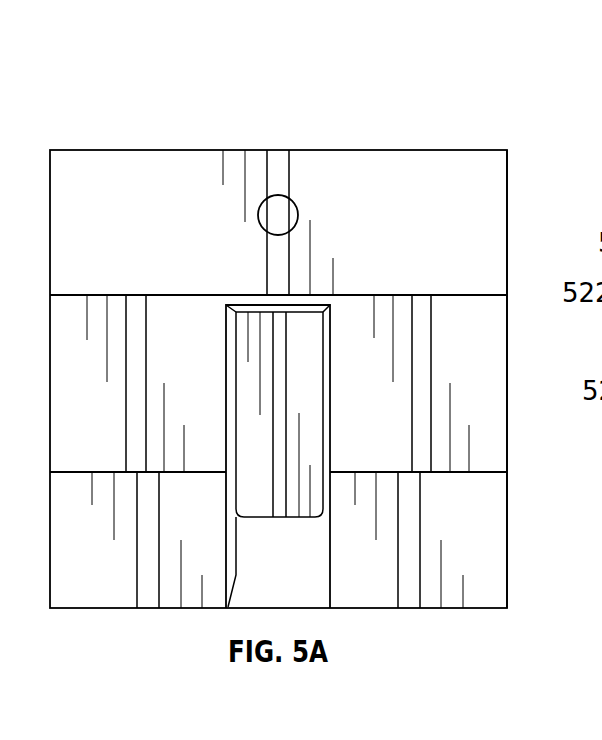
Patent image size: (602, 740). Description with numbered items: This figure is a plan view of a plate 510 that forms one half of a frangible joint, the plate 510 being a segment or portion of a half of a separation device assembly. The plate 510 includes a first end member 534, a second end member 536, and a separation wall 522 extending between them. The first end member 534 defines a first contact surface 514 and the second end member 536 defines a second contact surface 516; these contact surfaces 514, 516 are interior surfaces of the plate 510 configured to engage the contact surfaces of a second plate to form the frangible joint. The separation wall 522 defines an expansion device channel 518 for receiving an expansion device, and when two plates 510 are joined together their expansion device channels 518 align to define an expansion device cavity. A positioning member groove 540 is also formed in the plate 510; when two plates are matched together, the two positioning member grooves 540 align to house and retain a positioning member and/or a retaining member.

The plate 510 is at (156, 108).
The first contact surface 514 is at (437, 232).
The second contact surface 516 is at (115, 584).
The expansion device channel 518 is at (115, 434).
The separation wall 522 is at (482, 372).
The first end member 534 is at (482, 210).
The second end member 536 is at (482, 550).
The positioning member groove 540 is at (303, 500).